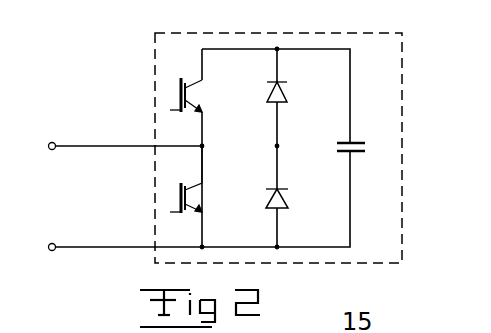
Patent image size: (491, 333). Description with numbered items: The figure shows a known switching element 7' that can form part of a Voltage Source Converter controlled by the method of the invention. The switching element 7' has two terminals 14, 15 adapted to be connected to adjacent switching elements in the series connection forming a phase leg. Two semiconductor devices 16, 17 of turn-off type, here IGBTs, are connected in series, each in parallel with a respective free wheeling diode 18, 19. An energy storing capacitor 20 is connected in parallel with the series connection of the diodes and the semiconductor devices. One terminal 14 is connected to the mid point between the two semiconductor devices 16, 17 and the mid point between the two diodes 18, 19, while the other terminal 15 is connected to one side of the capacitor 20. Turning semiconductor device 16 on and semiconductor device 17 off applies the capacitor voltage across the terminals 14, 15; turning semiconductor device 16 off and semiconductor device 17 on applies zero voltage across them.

The terminal 14 is at (60, 143).
The terminal 15 is at (60, 245).
The semiconductor device 16 is at (180, 93).
The semiconductor device 17 is at (180, 196).
The diode 18 is at (289, 94).
The diode 19 is at (290, 197).
The energy storing capacitor 20 is at (354, 137).
The switching element 7' is at (312, 148).